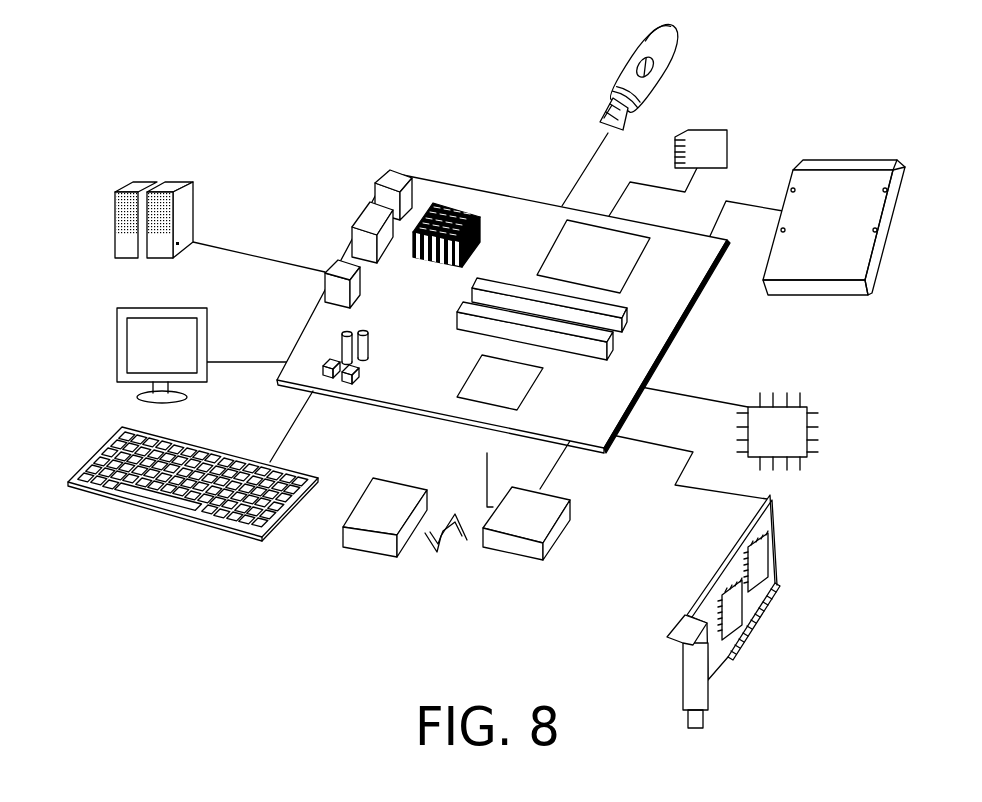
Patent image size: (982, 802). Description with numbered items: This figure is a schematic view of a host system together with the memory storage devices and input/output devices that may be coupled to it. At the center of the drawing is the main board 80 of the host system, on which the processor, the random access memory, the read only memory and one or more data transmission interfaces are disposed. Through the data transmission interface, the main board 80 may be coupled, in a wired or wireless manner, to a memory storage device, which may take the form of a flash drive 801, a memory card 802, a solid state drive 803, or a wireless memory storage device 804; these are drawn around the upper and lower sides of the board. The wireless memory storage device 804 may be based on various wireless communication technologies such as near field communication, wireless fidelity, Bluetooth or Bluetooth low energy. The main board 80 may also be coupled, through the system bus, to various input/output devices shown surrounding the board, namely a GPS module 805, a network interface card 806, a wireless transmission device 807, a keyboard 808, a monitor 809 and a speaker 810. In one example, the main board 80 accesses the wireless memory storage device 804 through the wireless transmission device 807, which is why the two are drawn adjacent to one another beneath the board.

The main board 80 is at (503, 215).
The flash drive 801 is at (632, 76).
The memory card 802 is at (728, 137).
The solid state drive 803 is at (853, 159).
The wireless memory storage device 804 is at (358, 494).
The GPS module 805 is at (817, 432).
The network interface card 806 is at (775, 555).
The wireless transmission device 807 is at (563, 542).
The keyboard 808 is at (198, 522).
The monitor 809 is at (117, 363).
The speaker 810 is at (113, 243).